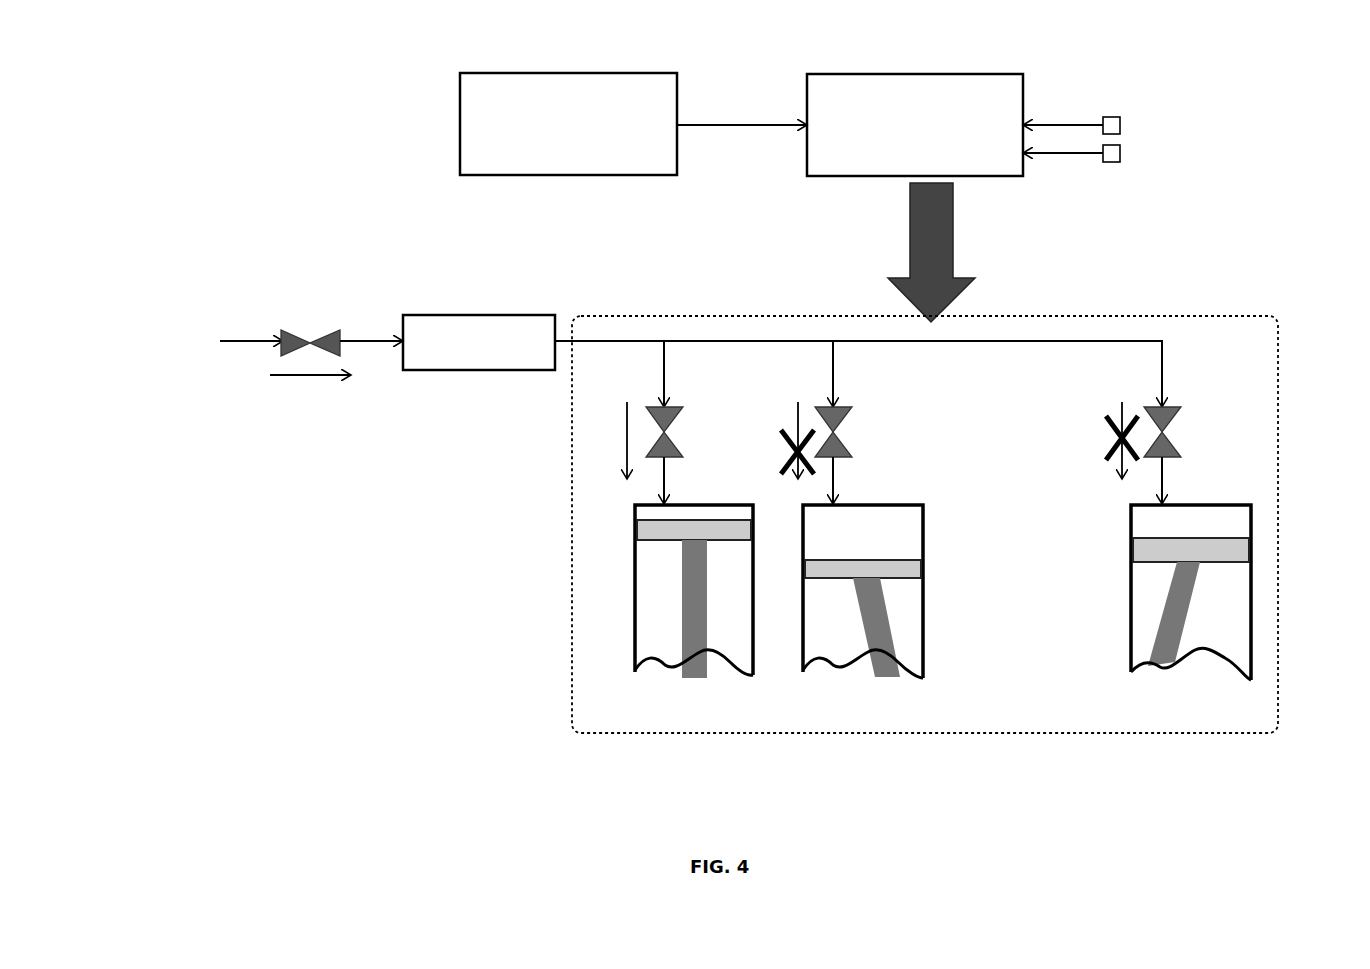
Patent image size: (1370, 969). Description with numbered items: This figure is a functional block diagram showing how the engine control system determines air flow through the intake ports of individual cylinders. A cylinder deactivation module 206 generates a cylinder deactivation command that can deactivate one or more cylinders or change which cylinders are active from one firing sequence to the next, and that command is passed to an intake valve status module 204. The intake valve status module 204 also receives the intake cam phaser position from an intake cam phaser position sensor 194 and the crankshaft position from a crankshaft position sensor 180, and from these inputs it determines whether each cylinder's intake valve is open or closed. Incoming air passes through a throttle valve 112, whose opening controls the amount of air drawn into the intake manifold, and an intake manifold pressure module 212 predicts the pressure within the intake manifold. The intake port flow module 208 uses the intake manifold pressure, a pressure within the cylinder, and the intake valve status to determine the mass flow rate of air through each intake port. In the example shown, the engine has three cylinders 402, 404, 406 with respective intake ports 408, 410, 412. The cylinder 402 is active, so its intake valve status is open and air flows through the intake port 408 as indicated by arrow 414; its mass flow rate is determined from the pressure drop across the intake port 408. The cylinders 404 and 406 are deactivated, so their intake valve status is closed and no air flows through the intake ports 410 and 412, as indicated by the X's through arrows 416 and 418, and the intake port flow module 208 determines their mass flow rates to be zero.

The cylinder deactivation module 206 is at (509, 73).
The intake valve status module 204 is at (855, 74).
The intake cam phaser position (ICPP) sensor 194 is at (1120, 120).
The crankshaft position (CKP) sensor 180 is at (1120, 148).
The throttle valve 112 is at (329, 333).
The intake manifold pressure module 212 is at (450, 315).
The intake port flow module 208 is at (740, 735).
The intake port 408 is at (680, 444).
The intake port 410 is at (848, 444).
The intake port 412 is at (1178, 444).
The arrow 414 is at (608, 438).
The arrow 416 is at (788, 438).
The arrow 418 is at (1111, 437).
The cylinder 402 is at (657, 510).
The cylinder 404 is at (895, 531).
The cylinder 406 is at (1147, 518).